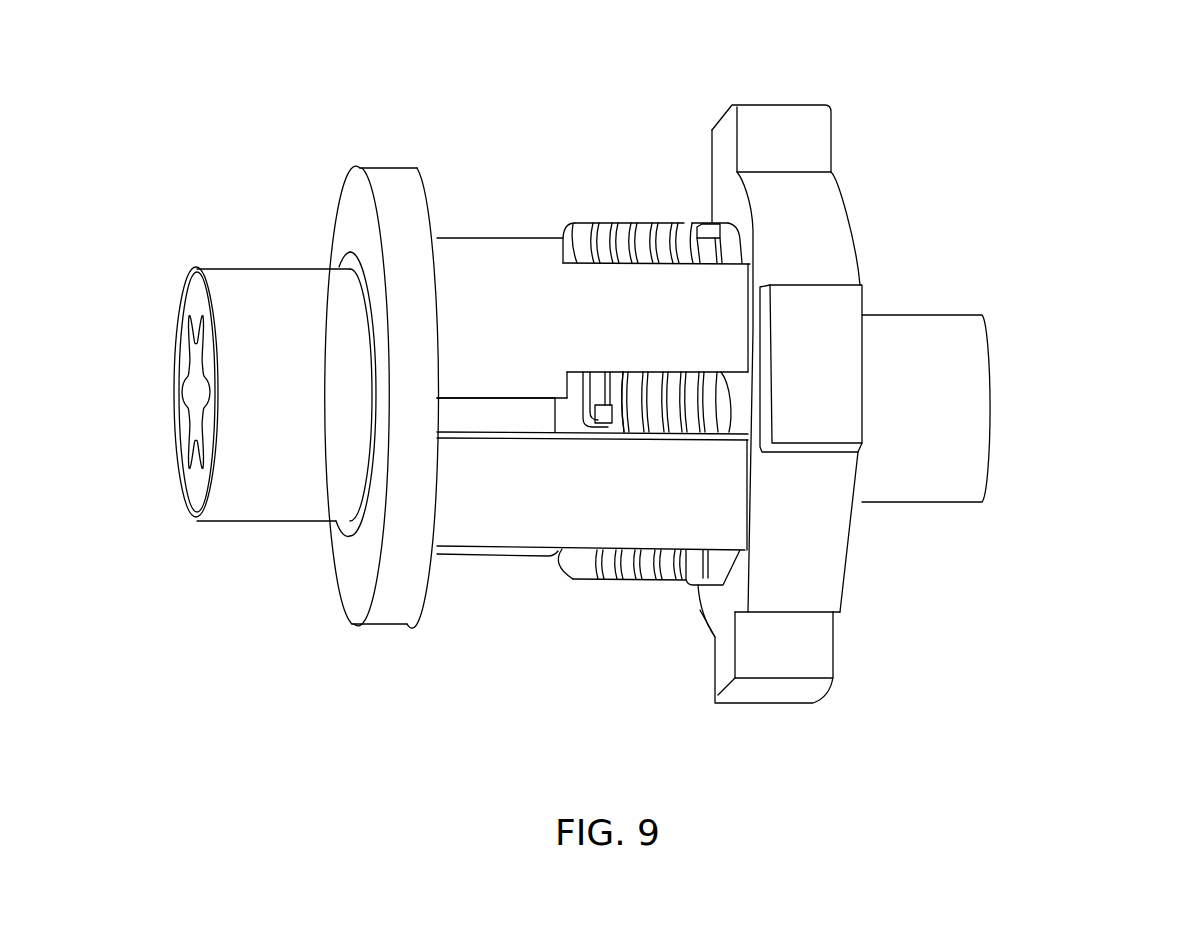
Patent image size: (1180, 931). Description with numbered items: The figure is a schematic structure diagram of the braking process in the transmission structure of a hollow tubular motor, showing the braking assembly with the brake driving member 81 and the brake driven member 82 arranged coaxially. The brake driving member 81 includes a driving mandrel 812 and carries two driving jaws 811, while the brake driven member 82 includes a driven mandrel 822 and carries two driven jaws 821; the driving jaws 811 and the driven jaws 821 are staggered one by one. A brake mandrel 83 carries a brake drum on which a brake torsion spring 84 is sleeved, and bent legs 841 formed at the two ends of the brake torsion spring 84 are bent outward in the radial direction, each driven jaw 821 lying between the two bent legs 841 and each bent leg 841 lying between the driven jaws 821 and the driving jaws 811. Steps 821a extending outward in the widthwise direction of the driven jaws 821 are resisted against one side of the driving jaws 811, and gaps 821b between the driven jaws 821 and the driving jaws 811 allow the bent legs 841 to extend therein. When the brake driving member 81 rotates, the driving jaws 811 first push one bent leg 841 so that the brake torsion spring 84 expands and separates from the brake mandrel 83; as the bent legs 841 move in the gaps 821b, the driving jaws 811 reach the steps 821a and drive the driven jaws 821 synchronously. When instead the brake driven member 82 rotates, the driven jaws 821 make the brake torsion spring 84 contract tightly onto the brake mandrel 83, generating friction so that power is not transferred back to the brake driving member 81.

The brake driving member 81 is at (461, 411).
The driving jaws 811 is at (572, 490).
The driving mandrel 812 is at (298, 363).
The brake driven member 82 is at (672, 364).
The driven jaws 821 is at (605, 330).
The steps 821a is at (494, 237).
The gaps 821b is at (687, 422).
The driven mandrel 822 is at (910, 393).
The brake mandrel 83 is at (788, 230).
The brake torsion spring 84 is at (690, 408).
The bent legs 841 is at (712, 232).